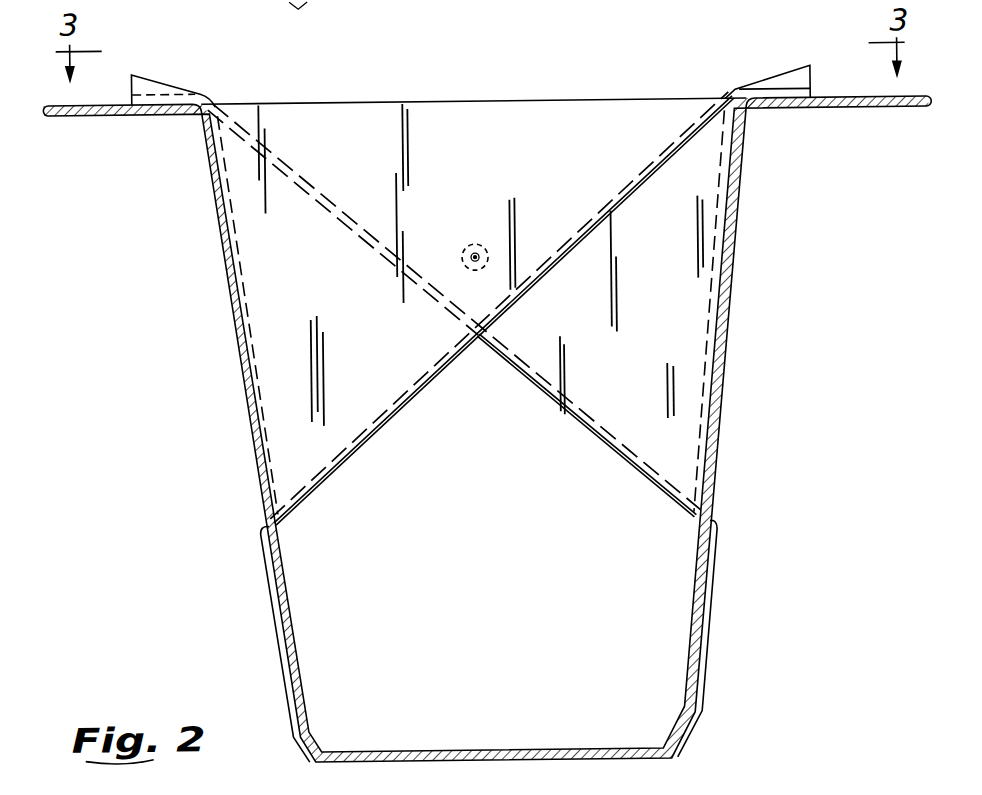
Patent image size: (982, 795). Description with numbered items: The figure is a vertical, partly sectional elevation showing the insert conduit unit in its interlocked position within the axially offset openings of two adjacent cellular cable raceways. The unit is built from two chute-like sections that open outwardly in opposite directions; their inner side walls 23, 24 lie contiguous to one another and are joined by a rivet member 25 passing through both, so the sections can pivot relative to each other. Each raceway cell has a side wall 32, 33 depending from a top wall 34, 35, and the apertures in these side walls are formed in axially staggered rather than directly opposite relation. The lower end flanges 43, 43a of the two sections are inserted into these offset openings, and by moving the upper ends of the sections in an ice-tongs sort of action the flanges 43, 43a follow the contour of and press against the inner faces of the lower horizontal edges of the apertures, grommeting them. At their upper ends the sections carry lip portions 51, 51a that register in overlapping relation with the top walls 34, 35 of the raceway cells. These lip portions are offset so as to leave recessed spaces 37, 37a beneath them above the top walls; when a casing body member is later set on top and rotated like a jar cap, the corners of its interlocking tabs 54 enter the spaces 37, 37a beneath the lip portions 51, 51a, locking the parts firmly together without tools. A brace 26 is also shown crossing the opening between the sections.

The inner side wall 23 is at (374, 378).
The inner side wall 24 is at (666, 361).
The rivet member 25 is at (475, 243).
The cross brace 26 is at (345, 457).
The raceway side wall 32 is at (742, 207).
The raceway side wall 33 is at (226, 272).
The raceway top wall 34 is at (74, 114).
The raceway top wall 35 is at (877, 113).
The recessed space 37 is at (158, 95).
The recessed space 37a is at (790, 100).
The lower end flange 43 is at (275, 600).
The lower end flange 43a is at (715, 587).
The upper lip portion 51 is at (792, 77).
The upper lip portion 51a is at (171, 80).
The interlocking tab 54 is at (144, 76).